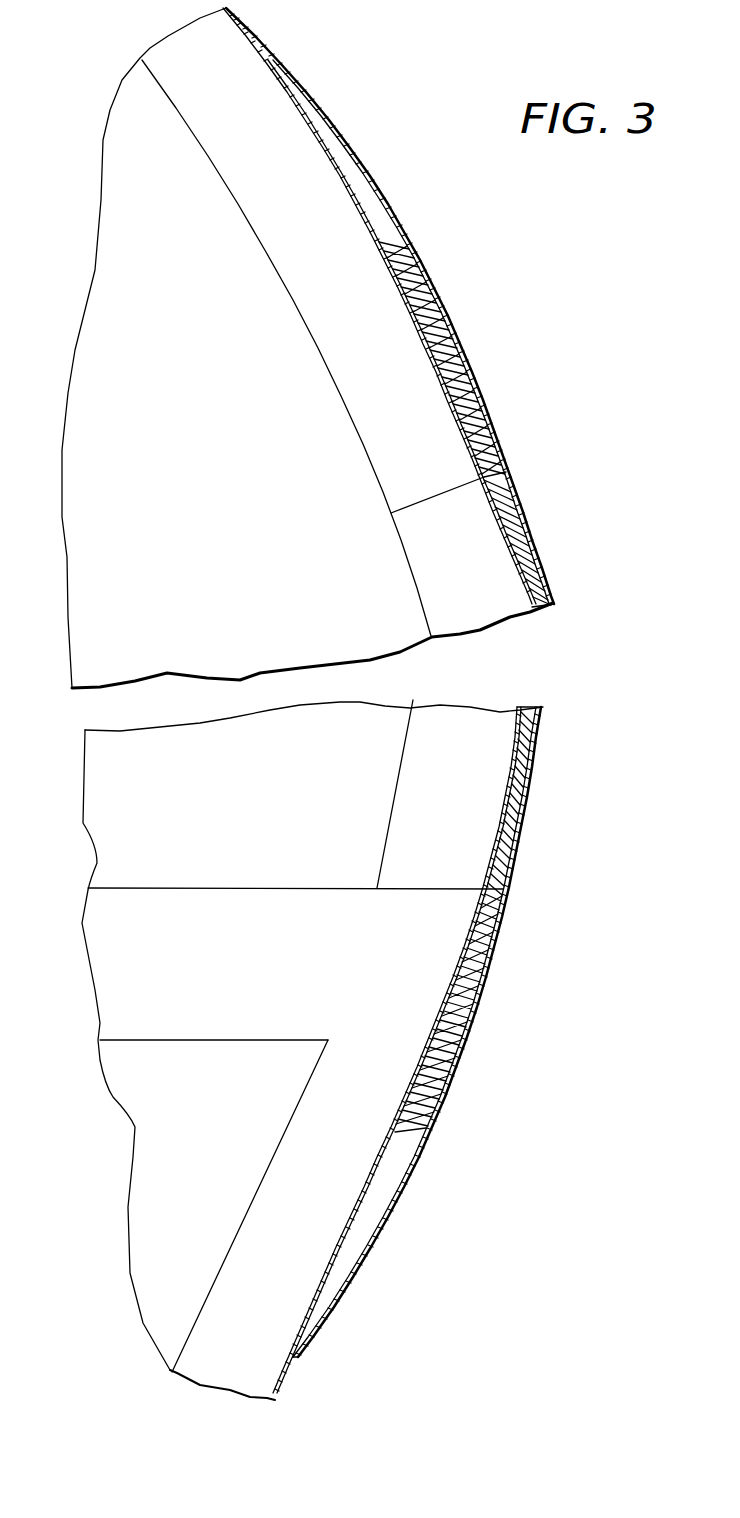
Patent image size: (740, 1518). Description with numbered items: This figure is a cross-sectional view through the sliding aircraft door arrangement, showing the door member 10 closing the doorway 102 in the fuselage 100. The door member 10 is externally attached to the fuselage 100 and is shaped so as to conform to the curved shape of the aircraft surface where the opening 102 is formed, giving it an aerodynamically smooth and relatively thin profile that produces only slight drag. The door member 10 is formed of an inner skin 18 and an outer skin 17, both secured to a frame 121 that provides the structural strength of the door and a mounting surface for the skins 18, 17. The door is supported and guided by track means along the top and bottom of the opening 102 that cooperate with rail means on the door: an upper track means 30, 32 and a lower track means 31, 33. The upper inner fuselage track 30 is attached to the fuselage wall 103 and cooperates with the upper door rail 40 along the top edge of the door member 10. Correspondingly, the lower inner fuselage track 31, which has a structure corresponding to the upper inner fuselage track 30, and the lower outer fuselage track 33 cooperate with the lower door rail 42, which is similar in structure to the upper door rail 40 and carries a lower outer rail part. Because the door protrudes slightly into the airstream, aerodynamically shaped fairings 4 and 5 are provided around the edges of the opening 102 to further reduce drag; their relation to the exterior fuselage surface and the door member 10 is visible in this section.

The fuselage 100 is at (178, 50).
The fuselage wall 103 is at (357, 219).
The fairing 4 is at (377, 211).
The upper track means 32 is at (440, 293).
The upper inner fuselage track 30 is at (413, 325).
The upper door rail 40 is at (477, 390).
The outer skin 17 is at (537, 551).
The door member 10 is at (533, 703).
The doorway 102 is at (463, 617).
The frame 121 is at (533, 768).
The inner skin 18 is at (497, 810).
The lower door rail 42 is at (470, 976).
The lower inner fuselage track 31 is at (443, 1003).
The lower outer fuselage track 33 is at (457, 1066).
The fairing 5 is at (383, 1201).